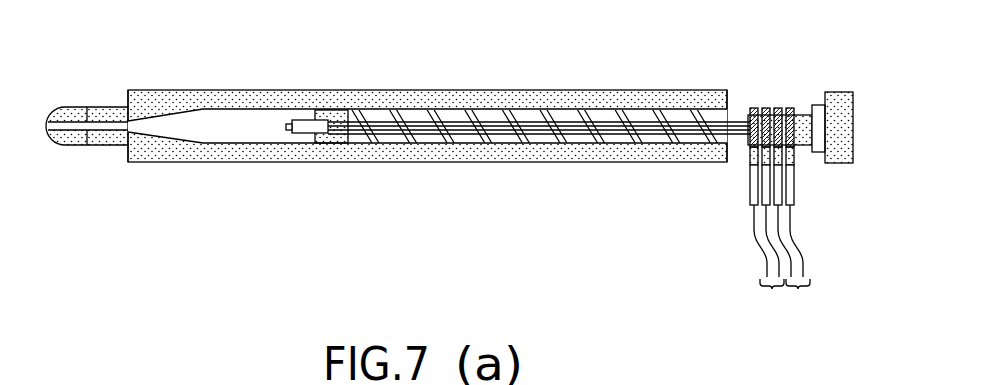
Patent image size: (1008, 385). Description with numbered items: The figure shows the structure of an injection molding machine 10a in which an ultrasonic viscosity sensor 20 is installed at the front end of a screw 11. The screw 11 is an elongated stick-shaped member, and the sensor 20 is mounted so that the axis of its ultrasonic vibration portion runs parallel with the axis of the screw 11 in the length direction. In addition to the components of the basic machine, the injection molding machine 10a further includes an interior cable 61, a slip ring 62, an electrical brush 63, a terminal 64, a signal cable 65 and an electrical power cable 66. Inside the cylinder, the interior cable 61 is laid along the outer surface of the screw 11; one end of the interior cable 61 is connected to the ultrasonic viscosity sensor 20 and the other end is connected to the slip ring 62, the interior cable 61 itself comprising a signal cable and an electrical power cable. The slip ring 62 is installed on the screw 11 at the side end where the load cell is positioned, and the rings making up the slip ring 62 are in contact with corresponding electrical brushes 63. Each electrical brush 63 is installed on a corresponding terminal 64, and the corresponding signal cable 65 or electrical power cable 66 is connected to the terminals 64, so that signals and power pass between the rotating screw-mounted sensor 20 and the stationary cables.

The injection molding machine 10a is at (642, 49).
The screw 11 is at (338, 114).
The ultrasonic viscosity sensor 20 is at (300, 119).
The interior cable 61 is at (511, 112).
The slip ring 62 is at (778, 108).
The electrical brush 63 is at (795, 157).
The terminal 64 is at (750, 188).
The signal cable 65 is at (772, 290).
The electrical power cable 66 is at (798, 290).